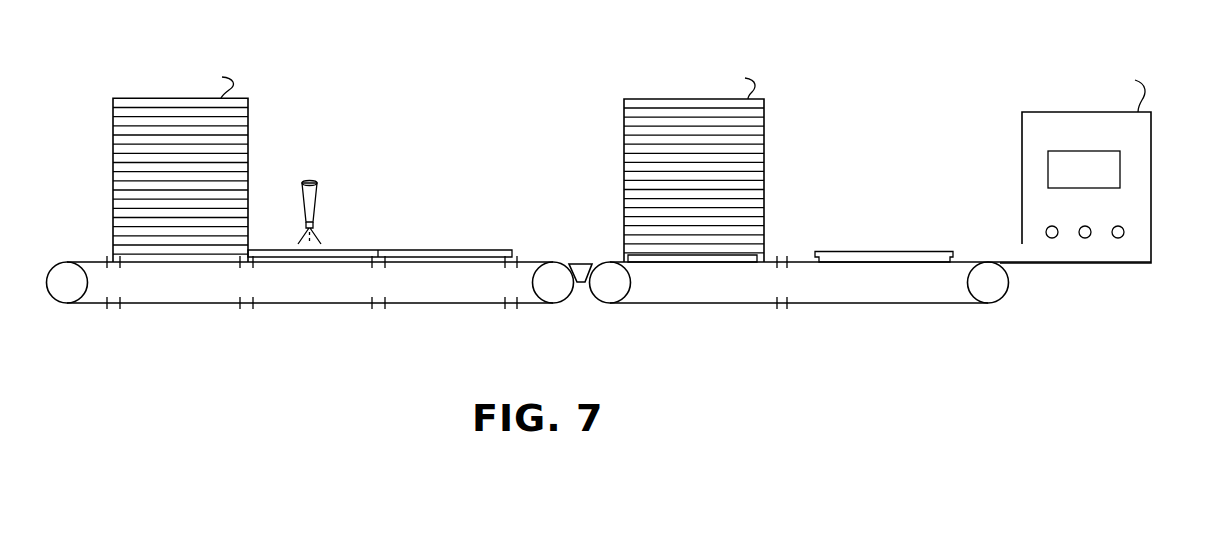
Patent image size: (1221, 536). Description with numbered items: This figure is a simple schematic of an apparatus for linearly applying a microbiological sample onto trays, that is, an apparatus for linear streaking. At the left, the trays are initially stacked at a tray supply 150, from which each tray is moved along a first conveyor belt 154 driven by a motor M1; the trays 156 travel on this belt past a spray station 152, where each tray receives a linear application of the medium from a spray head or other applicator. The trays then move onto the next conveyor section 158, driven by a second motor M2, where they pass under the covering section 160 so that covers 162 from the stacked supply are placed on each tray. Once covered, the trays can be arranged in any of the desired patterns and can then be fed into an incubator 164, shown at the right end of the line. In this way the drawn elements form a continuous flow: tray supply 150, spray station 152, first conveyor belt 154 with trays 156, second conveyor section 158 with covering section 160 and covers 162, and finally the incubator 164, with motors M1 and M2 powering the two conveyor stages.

The stack of trays 150 is at (113, 100).
The spray station 152 is at (333, 135).
The first conveyor belt 154 is at (172, 303).
The trays on conveyor 156 is at (250, 263).
The conveyor section 158 is at (815, 305).
The covering section 160 is at (792, 78).
The covers 162 is at (313, 199).
The incubator 164 is at (1141, 167).
The motor 1 M1 is at (67, 292).
The motor 2 M2 is at (610, 293).